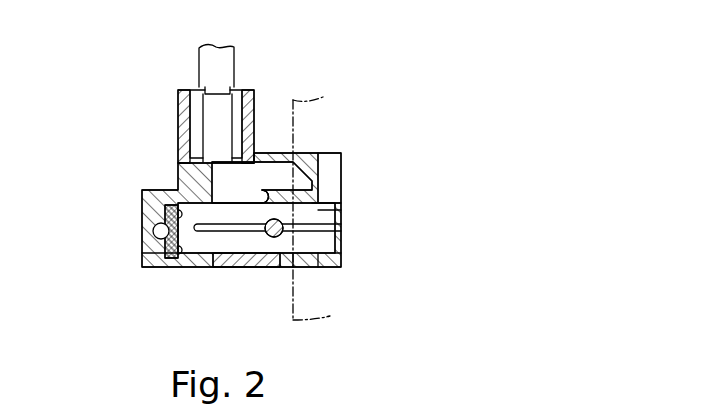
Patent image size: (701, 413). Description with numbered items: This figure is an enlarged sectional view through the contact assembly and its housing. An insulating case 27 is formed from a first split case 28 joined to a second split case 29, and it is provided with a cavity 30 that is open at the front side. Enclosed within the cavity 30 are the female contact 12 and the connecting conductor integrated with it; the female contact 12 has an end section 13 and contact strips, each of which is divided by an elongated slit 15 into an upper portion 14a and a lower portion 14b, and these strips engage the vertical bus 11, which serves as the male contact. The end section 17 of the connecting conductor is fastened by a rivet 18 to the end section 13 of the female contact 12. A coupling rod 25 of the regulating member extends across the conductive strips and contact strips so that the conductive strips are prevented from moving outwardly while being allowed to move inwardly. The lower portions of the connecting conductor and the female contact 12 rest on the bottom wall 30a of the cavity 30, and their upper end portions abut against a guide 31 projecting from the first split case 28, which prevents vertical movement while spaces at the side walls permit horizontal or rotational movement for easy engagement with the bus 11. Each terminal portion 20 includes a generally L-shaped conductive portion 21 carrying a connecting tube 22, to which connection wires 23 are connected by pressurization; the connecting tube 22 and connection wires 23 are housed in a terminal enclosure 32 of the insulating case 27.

The vertical bus 11 is at (323, 97).
The female contact 12 is at (345, 225).
The end section 13 is at (178, 262).
The upper portion 14a is at (333, 201).
The lower portion 14b is at (258, 266).
The elongated slit 15 is at (305, 240).
The end section 17 is at (163, 258).
The rivet 18 is at (155, 228).
The terminal portion 20 is at (196, 153).
The conductive portion 21 is at (257, 177).
The connecting tube 22 is at (210, 130).
The connection wires 23 is at (212, 62).
The coupling rod 25 is at (282, 238).
The insulating case 27 is at (157, 181).
The first split case 28 is at (159, 265).
The second split case 29 is at (230, 266).
The cavity 30 is at (167, 215).
The bottom wall 30a is at (205, 235).
The guide 31 is at (270, 193).
The terminal enclosure 32 is at (223, 92).